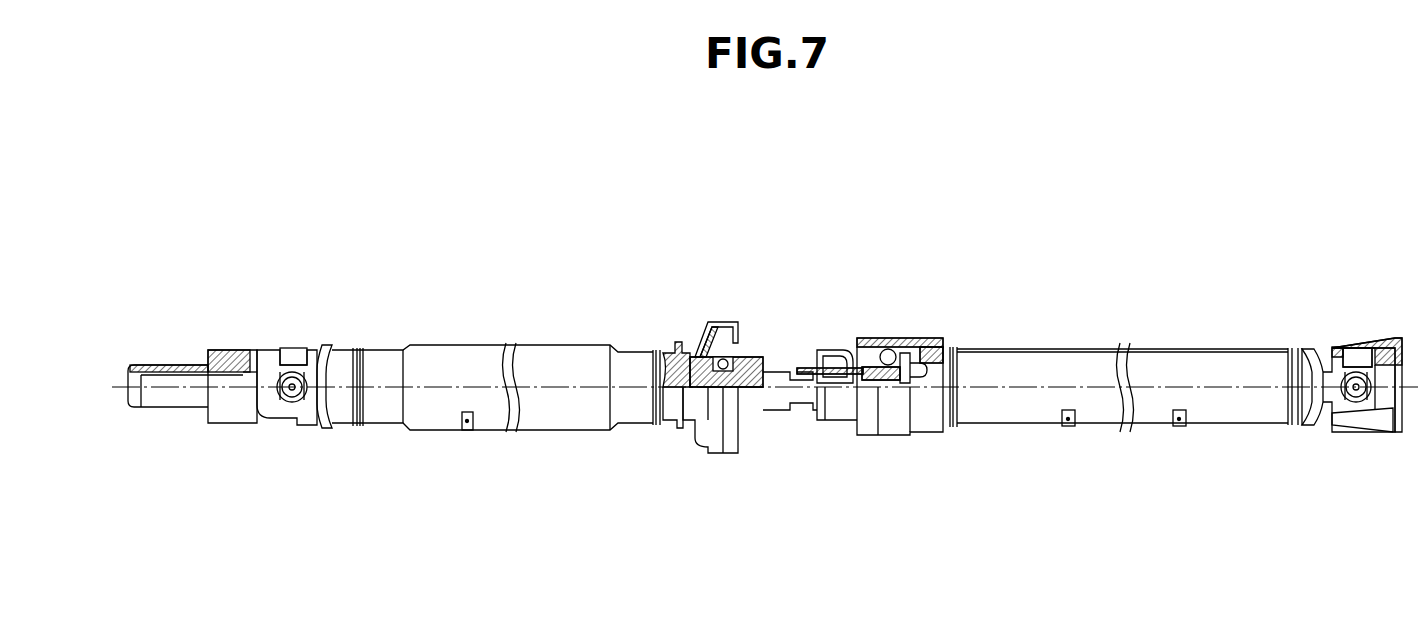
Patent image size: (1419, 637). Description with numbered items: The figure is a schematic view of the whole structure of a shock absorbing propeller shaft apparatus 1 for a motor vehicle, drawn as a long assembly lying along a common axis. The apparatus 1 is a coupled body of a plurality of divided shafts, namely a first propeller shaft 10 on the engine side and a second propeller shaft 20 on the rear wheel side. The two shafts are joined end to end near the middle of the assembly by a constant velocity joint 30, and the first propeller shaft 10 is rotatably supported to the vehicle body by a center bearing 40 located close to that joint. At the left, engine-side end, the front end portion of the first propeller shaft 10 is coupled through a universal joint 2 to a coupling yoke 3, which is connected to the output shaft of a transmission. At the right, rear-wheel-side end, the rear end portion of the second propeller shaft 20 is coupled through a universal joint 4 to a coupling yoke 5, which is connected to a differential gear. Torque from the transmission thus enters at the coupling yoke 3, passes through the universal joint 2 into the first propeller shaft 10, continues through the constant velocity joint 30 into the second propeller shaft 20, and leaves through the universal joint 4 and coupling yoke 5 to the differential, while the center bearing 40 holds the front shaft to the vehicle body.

The shock absorbing propeller shaft apparatus 1 is at (805, 262).
The universal joint 2 is at (312, 341).
The coupling yoke 3 is at (180, 365).
The universal joint 4 is at (1325, 340).
The coupling yoke 5 is at (1388, 338).
The first propeller shaft 10 is at (677, 343).
The second propeller shaft 20 is at (932, 338).
The constant velocity joint 30 is at (890, 352).
The center bearing 40 is at (747, 338).